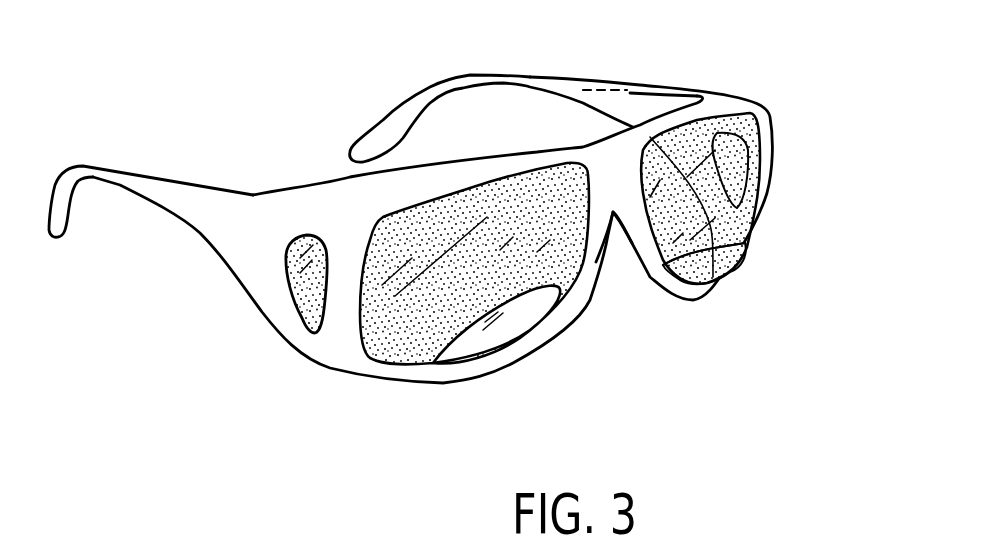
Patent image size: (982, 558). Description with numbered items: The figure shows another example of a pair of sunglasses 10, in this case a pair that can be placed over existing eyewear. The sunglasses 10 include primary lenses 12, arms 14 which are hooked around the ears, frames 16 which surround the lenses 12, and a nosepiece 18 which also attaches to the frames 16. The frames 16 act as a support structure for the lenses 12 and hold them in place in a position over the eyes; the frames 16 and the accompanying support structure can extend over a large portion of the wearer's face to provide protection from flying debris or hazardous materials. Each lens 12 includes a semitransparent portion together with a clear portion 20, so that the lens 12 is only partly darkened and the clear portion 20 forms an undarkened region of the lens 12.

The sunglasses 10 is at (228, 382).
The primary lens 12 is at (390, 357).
The arm 14 is at (138, 173).
The frame 16 is at (768, 193).
The nosepiece 18 is at (628, 243).
The clear portion 20 is at (500, 338).